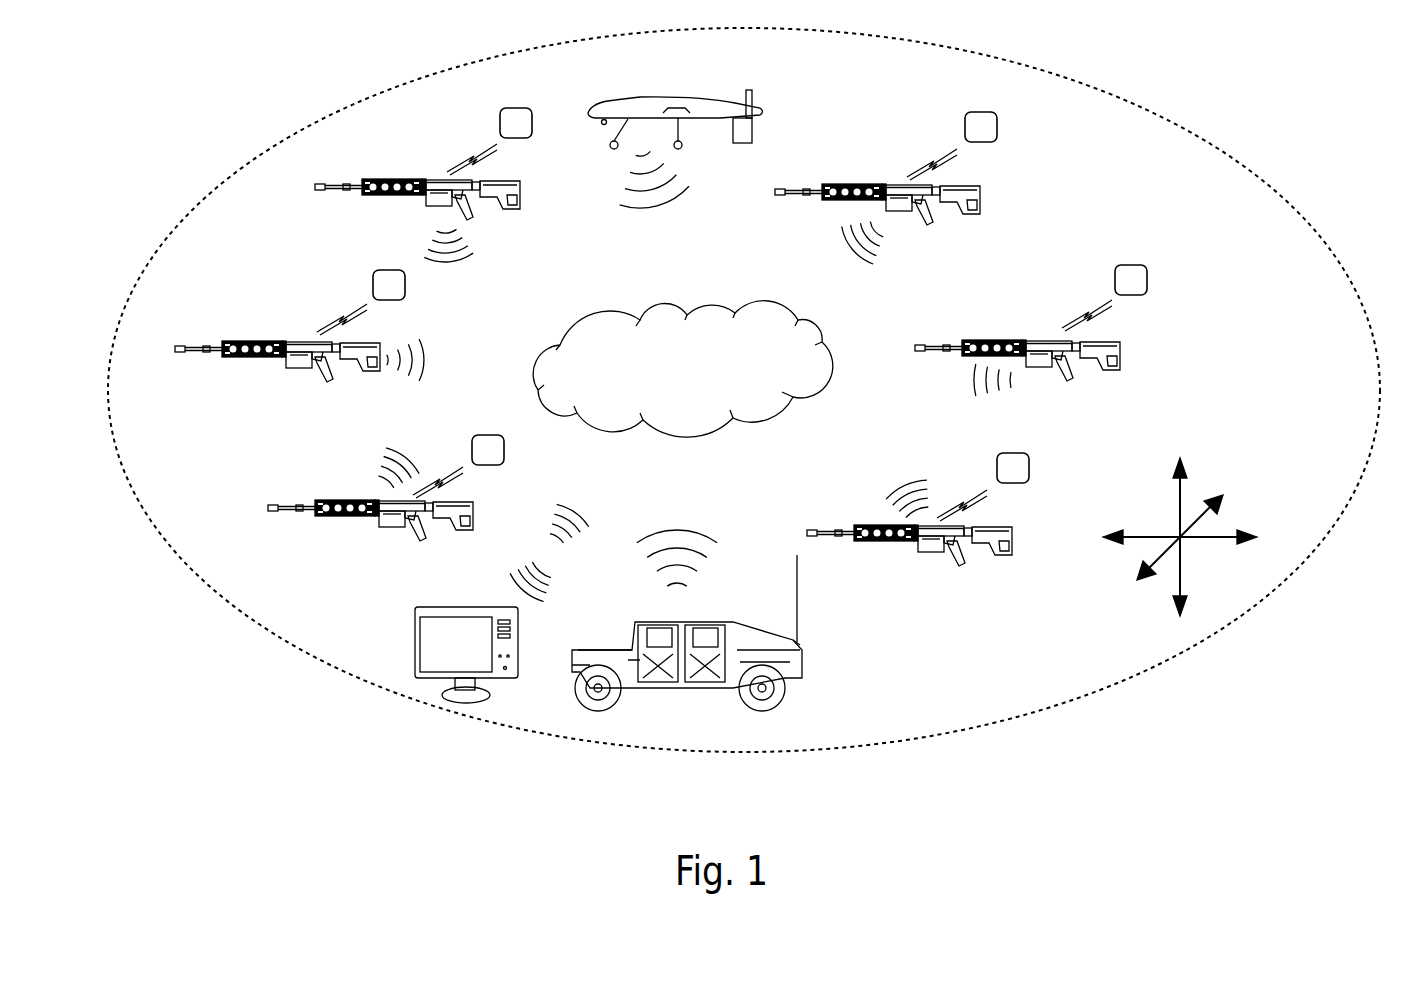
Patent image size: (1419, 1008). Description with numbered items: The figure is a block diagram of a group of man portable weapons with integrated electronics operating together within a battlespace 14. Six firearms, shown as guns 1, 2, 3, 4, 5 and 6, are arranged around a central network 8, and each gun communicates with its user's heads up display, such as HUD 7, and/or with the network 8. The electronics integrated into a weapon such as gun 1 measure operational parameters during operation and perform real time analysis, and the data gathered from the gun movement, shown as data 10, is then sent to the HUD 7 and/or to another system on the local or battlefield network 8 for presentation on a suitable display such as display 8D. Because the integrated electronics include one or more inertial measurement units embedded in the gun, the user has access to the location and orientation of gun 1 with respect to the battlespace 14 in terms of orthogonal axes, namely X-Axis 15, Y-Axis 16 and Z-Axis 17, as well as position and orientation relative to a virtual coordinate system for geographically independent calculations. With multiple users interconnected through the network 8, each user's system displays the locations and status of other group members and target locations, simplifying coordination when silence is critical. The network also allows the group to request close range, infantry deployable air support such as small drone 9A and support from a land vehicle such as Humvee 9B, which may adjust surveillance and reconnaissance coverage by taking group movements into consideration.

The gun 1 is at (1040, 342).
The gun 2 is at (890, 186).
The gun 3 is at (402, 183).
The gun 4 is at (292, 342).
The gun 5 is at (386, 528).
The gun 6 is at (920, 552).
The heads up display (HUD) 7 is at (1131, 266).
The network 8 is at (710, 302).
The display 8D is at (418, 652).
The small drone 9A is at (626, 101).
The Humvee 9B is at (728, 622).
The data 10 is at (1102, 314).
The battlespace 14 is at (1195, 656).
The X-Axis 15 is at (1144, 537).
The Y-Axis 16 is at (1204, 508).
The Z-Axis 17 is at (1181, 574).